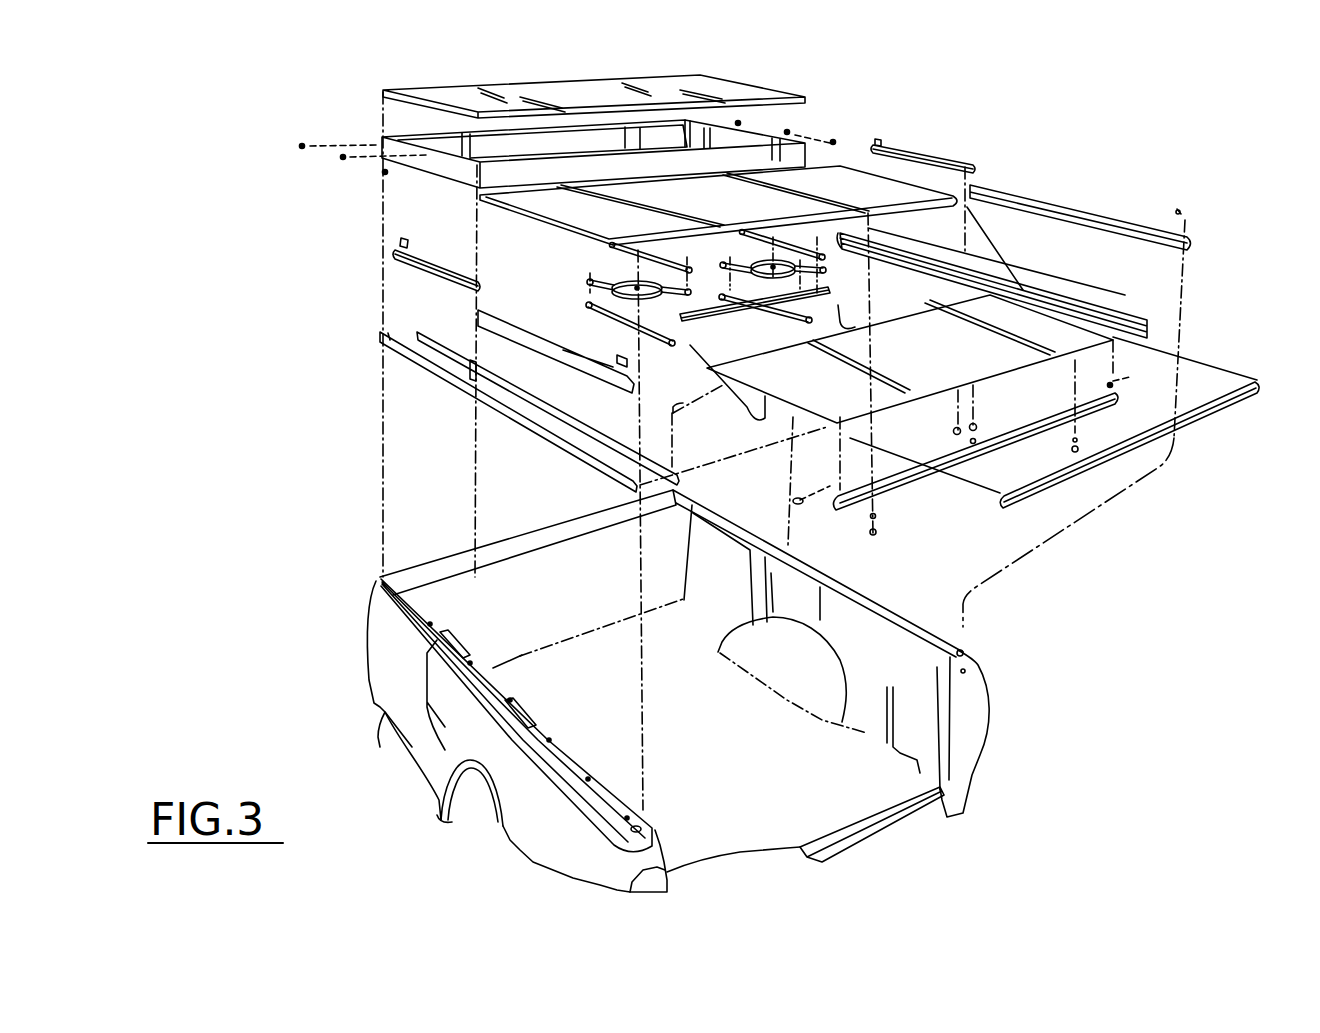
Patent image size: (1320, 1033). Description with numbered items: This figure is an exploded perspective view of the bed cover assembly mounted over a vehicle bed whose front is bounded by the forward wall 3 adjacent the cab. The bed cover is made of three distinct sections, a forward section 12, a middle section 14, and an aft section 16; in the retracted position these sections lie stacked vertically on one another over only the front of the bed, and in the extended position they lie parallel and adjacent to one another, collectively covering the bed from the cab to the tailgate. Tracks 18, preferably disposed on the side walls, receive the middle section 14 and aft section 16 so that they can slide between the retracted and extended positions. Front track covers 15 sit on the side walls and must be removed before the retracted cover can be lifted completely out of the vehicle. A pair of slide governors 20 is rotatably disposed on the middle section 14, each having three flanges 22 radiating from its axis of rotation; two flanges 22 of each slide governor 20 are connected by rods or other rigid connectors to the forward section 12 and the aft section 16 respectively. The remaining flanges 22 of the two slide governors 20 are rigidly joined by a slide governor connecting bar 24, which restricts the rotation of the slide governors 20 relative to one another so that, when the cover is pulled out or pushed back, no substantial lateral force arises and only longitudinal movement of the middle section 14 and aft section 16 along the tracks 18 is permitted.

The forward wall 3 is at (550, 557).
The forward section 12 is at (755, 92).
The middle section 14 is at (830, 180).
The front track covers 15 is at (937, 157).
The aft section 16 is at (1028, 327).
The tracks 18 is at (1092, 303).
The slide governors 20 is at (760, 265).
The flanges 22 is at (590, 282).
The slide governor connecting bar 24 is at (681, 317).